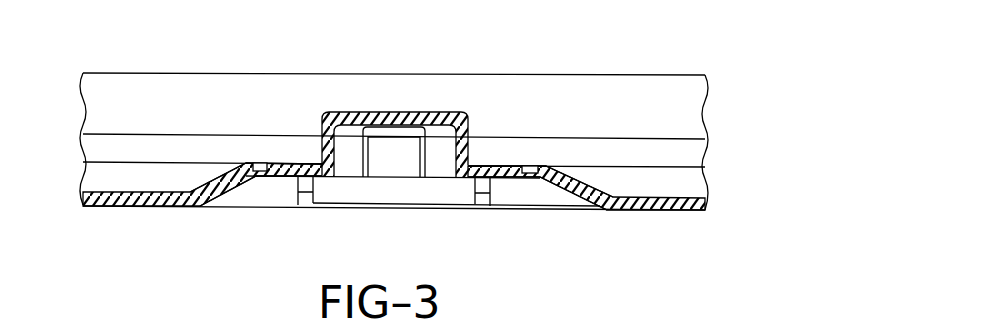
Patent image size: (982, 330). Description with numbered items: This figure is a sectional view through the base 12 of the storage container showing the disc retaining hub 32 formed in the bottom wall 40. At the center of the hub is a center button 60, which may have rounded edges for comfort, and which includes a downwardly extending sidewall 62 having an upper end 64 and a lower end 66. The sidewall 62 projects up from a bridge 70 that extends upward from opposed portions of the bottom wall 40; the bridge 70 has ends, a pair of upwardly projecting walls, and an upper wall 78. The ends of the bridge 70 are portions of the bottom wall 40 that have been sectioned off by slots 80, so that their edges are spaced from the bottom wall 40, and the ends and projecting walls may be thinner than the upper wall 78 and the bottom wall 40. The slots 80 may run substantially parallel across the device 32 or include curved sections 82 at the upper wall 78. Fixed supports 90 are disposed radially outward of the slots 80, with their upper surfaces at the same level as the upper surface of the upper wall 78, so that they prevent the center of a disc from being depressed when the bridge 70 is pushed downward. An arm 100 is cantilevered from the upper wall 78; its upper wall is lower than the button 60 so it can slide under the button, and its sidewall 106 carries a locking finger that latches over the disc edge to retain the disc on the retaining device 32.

The base 12 is at (152, 60).
The retaining hub 32 is at (438, 78).
The bottom wall 40 is at (663, 207).
The center button 60 is at (390, 112).
The sidewall 62 is at (321, 147).
The upper end 64 is at (466, 128).
The lower end 66 is at (468, 166).
The bridge 70 is at (272, 148).
The upper wall 78 is at (272, 178).
The slots 80 is at (306, 198).
The curved sections 82 is at (260, 165).
The fixed supports 90 is at (213, 190).
The arm 100 is at (378, 180).
The sidewall 106 is at (403, 165).